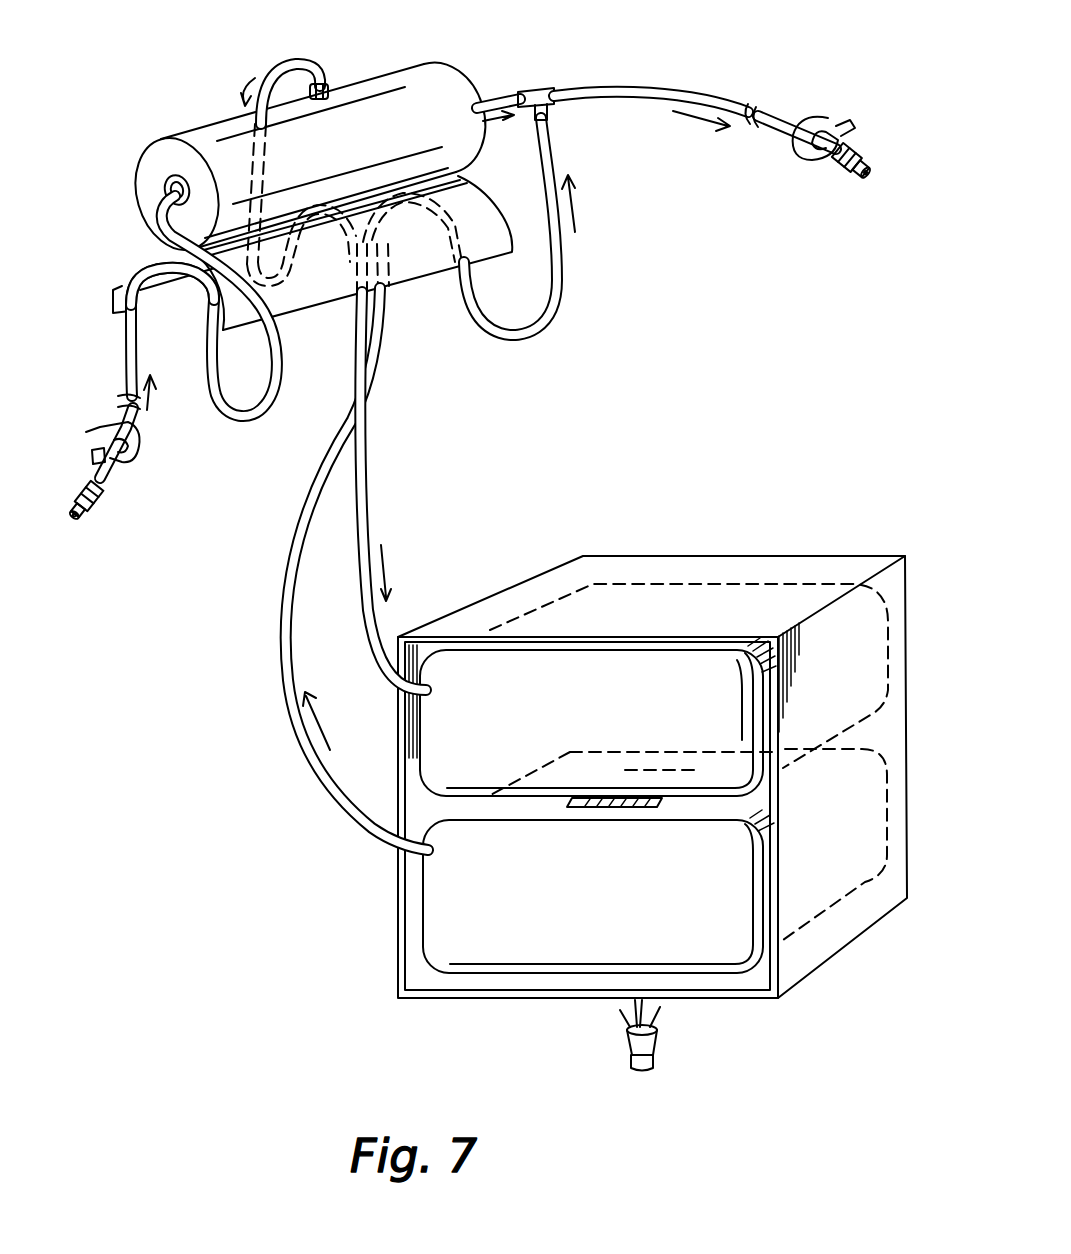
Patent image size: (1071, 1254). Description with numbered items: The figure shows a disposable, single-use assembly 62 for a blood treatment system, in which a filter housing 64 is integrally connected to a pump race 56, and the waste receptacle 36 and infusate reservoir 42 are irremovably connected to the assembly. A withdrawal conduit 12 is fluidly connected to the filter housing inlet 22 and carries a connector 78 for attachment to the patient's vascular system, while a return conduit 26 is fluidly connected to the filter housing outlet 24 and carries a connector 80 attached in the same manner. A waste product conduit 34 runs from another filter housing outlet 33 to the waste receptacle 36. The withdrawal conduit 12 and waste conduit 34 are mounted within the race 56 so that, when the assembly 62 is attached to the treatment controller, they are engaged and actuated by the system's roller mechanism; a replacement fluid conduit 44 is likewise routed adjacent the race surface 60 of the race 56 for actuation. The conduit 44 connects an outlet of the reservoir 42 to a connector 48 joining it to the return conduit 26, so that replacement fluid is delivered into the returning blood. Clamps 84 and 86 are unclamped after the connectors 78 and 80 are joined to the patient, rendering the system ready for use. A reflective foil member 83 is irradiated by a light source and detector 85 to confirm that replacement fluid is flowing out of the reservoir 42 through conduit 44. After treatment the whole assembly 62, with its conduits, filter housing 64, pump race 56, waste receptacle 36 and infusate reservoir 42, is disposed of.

The withdrawal conduit 12 is at (126, 355).
The filter housing inlet 22 is at (163, 190).
The filter housing outlet 24 is at (478, 100).
The return conduit 26 is at (637, 86).
The filter housing outlet 33 is at (330, 88).
The waste product conduit 34 is at (305, 68).
The waste receptacle 36 is at (614, 735).
The infusate reservoir 42 is at (601, 913).
The replacement fluid conduit 44 is at (550, 302).
The connector 48 is at (540, 90).
The pump race 56 is at (125, 268).
The race surface 60 is at (140, 292).
The assembly 62 is at (288, 176).
The filter housing 64 is at (148, 156).
The connector 78 is at (98, 504).
The connector 80 is at (862, 147).
The reflective foil member 83 is at (632, 808).
The clamp 84 is at (136, 447).
The light source and detector 85 is at (659, 1044).
The clamp 86 is at (807, 118).